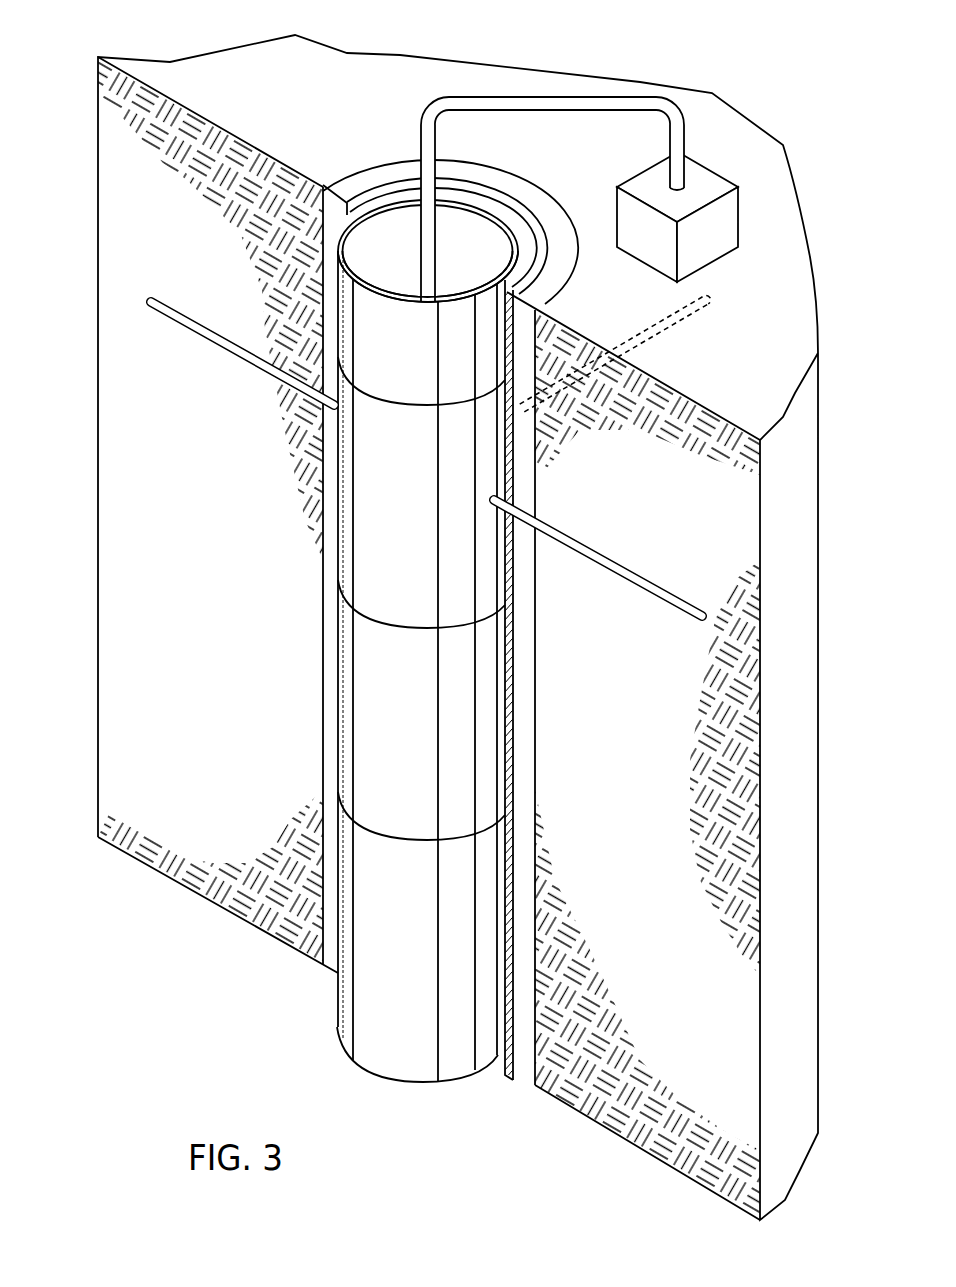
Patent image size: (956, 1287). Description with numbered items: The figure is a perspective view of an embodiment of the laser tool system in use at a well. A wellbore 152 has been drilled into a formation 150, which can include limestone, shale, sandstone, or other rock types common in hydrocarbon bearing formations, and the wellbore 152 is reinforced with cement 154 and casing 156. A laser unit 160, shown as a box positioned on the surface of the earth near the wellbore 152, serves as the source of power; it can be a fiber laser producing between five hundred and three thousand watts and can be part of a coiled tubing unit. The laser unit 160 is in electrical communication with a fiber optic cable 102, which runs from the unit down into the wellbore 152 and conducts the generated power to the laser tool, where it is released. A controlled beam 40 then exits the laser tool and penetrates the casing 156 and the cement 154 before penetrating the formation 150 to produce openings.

The controlled beam 40 is at (600, 557).
The fiber optic cable 102 is at (572, 95).
The formation 150 is at (168, 183).
The wellbore 152 is at (513, 213).
The cement 154 is at (525, 604).
The casing 156 is at (512, 632).
The laser unit 160 is at (740, 215).